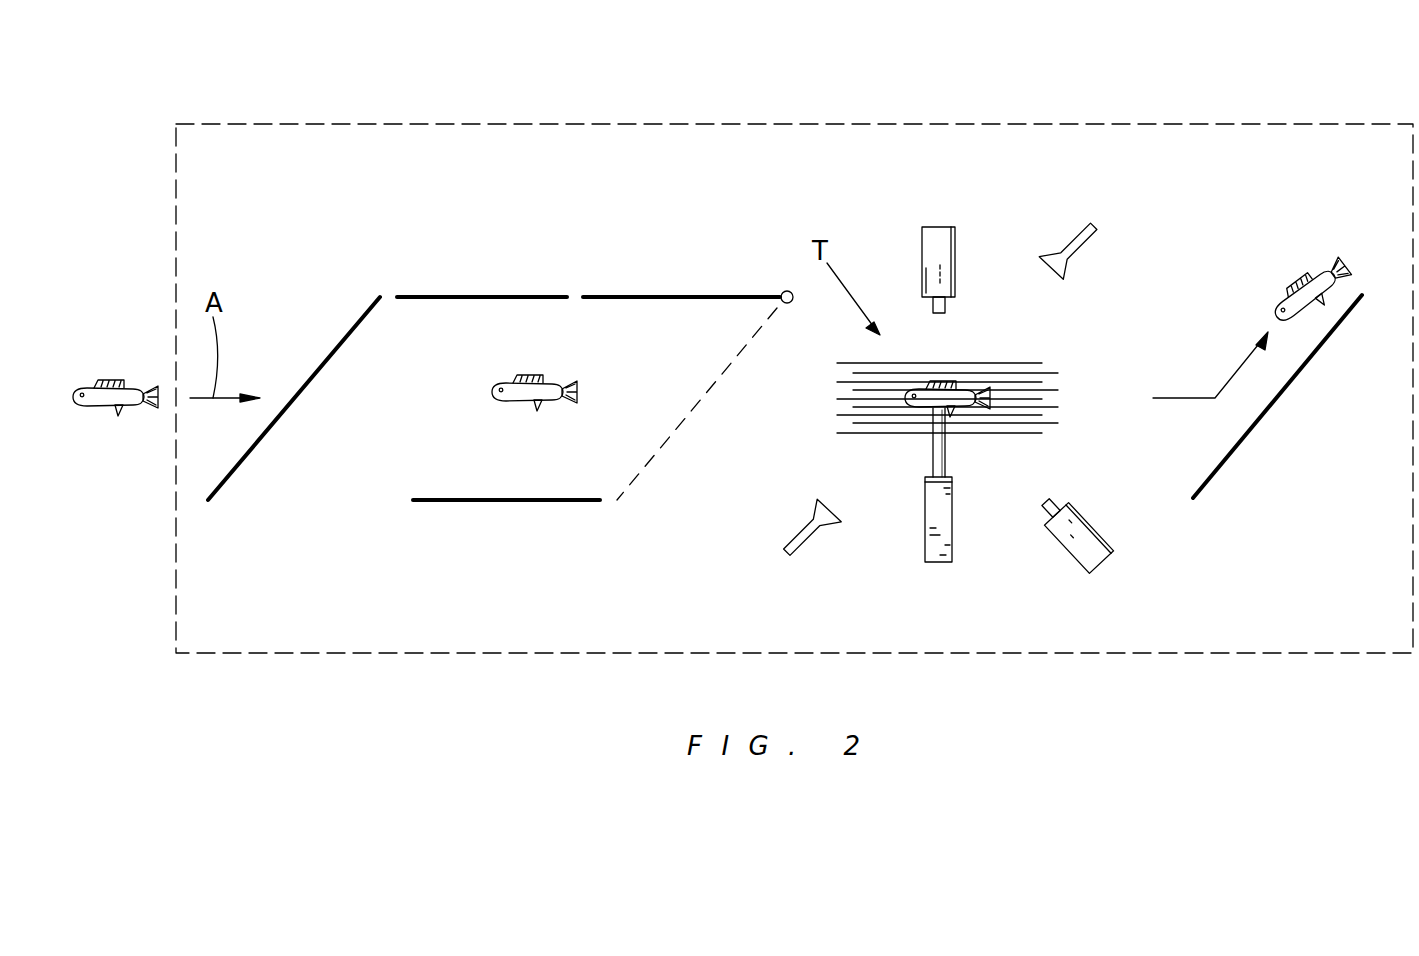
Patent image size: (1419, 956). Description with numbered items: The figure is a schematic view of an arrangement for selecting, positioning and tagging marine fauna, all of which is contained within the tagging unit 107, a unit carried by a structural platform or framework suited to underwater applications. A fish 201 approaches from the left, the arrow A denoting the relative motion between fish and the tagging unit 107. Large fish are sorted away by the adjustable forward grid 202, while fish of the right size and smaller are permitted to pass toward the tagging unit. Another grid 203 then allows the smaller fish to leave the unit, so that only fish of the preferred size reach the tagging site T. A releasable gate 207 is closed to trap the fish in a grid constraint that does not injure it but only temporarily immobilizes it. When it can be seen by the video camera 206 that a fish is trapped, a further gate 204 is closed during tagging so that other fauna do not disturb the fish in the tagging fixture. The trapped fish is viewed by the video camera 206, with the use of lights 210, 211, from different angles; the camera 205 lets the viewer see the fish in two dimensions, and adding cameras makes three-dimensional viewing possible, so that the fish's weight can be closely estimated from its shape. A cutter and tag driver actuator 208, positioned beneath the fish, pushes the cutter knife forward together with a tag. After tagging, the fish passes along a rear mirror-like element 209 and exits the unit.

The tagging unit 107 is at (466, 107).
The fish 201 is at (128, 408).
The adjustable forward grid 202 is at (323, 362).
The grid 203 is at (512, 297).
The gate 204 is at (667, 297).
The camera 205 is at (1102, 532).
The video camera 206 is at (955, 252).
The releasable gate 207 is at (1007, 372).
The cutter and tag driver actuator 208 is at (952, 538).
The exit mirror 209 is at (1242, 443).
The lights 210 is at (1063, 227).
The light source 211 is at (807, 538).